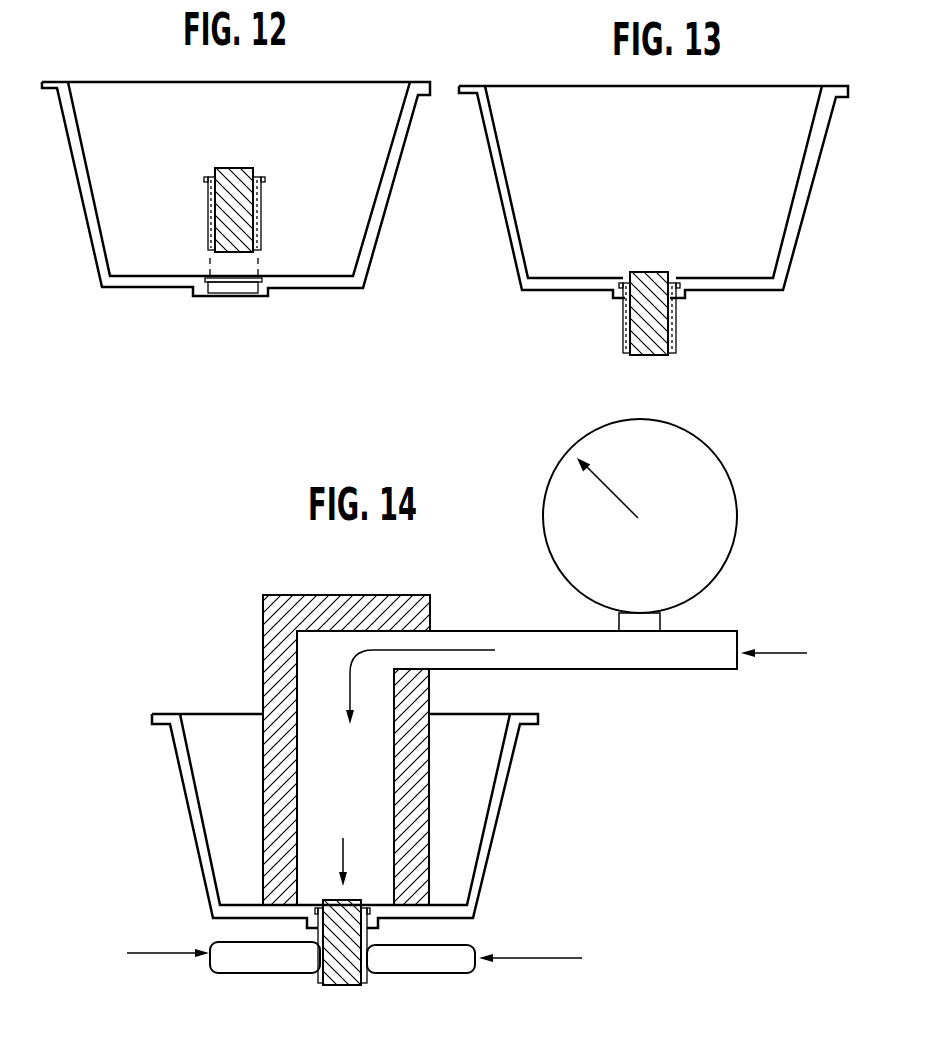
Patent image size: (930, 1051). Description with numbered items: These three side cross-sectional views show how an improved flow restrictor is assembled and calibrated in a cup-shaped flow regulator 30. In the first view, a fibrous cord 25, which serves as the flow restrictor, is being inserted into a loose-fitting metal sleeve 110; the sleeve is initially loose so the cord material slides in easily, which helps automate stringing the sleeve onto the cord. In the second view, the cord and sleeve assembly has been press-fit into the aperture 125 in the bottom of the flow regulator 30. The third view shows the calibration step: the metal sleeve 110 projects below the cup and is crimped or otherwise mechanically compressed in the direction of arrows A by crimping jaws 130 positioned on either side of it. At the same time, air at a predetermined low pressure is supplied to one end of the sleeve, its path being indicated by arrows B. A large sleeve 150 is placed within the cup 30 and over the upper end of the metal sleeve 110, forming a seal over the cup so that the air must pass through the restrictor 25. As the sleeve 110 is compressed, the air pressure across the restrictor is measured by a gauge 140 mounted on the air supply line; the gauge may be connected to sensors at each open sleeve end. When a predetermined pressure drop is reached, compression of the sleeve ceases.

In FIG. 12, the fibrous cord 25 is at (253, 228).
In FIG. 13, the fibrous cord 25 is at (652, 320).
In FIG. 14, the fibrous cord 25 is at (338, 987).
In FIG. 12, the flow regulator 30 is at (80, 237).
In FIG. 13, the flow regulator 30 is at (505, 241).
In FIG. 14, the flow regulator 30 is at (197, 861).
In FIG. 12, the metal sleeve 110 is at (206, 226).
In FIG. 14, the metal sleeve 110 is at (367, 981).
In FIG. 12, the aperture 125 is at (245, 294).
In FIG. 14, the crimping jaws 130 is at (243, 963).
In FIG. 14, the gauge 140 is at (720, 452).
In FIG. 14, the large sleeve 150 is at (263, 645).
In FIG. 14, the arrows A is at (158, 953).
In FIG. 14, the arrows B is at (457, 648).